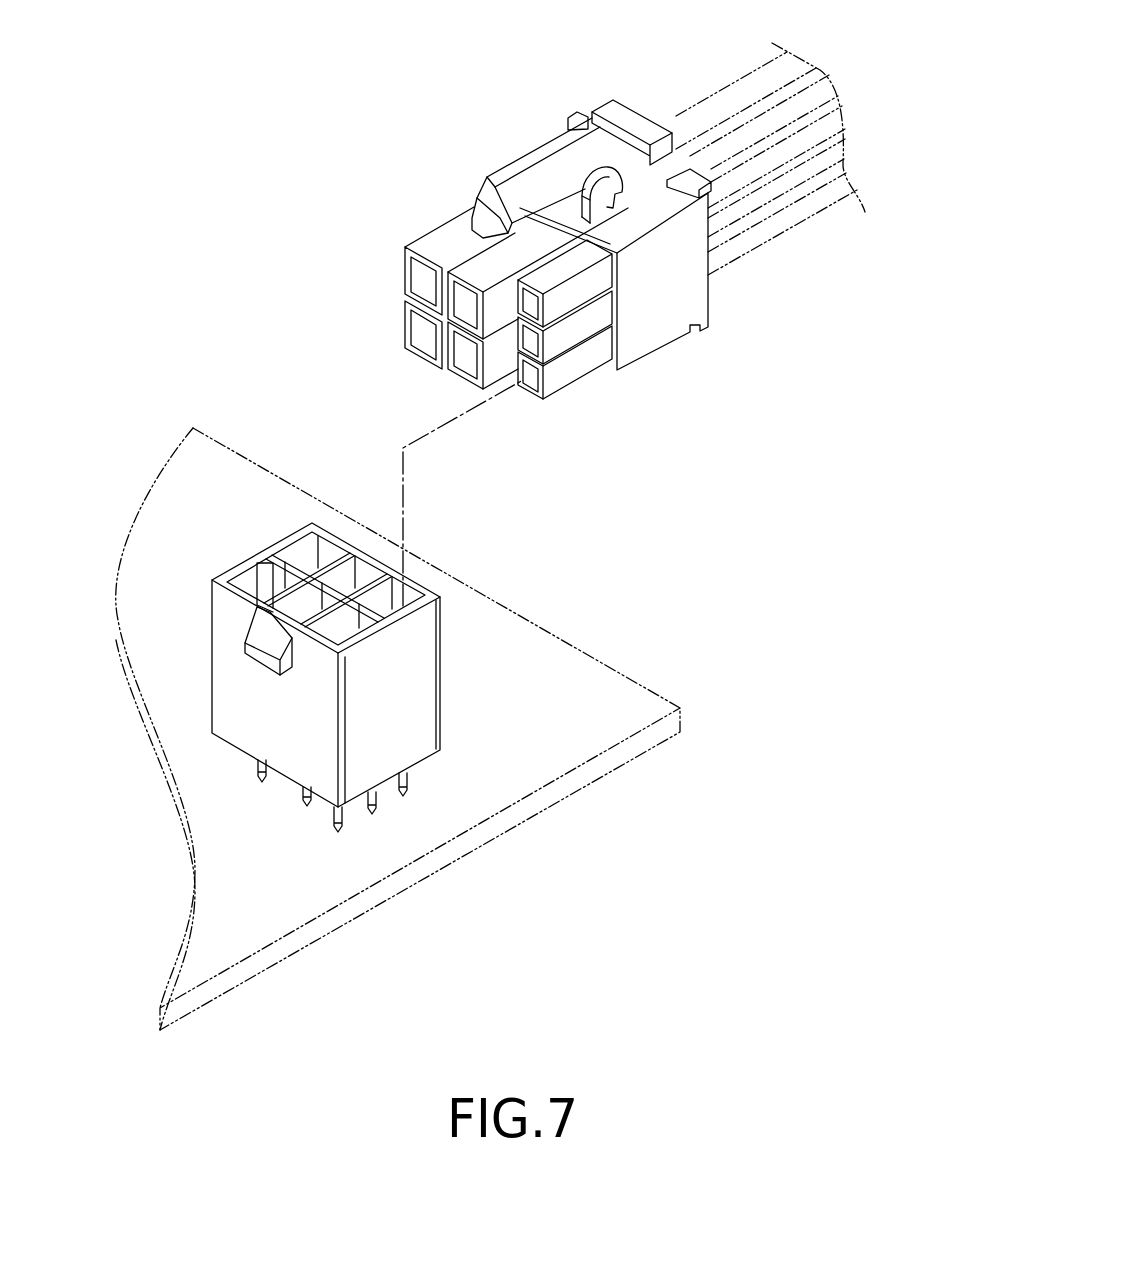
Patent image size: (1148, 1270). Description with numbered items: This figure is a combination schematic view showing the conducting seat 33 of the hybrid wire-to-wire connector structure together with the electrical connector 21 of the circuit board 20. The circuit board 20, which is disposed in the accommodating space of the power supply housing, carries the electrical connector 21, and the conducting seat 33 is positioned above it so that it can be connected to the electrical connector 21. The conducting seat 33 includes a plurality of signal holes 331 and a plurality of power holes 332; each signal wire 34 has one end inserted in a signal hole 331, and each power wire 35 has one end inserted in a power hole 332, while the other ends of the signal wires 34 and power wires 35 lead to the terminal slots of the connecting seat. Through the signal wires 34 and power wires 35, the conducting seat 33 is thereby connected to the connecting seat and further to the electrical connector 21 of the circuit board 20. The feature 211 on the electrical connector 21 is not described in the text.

The circuit board 20 is at (597, 680).
The electrical connector 21 is at (391, 655).
The key tab 211 is at (258, 562).
The conducting seat 33 is at (543, 289).
The signal hole 331 is at (528, 386).
The power hole 332 is at (417, 320).
The signal wire 34 is at (786, 228).
The power wire 35 is at (724, 98).